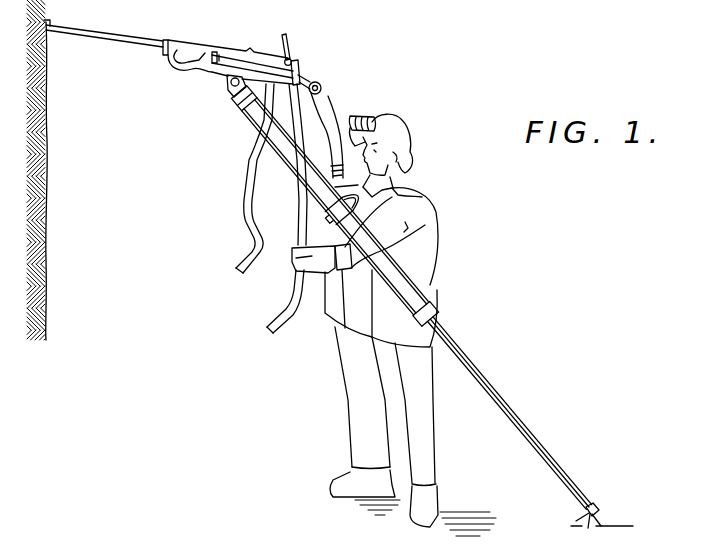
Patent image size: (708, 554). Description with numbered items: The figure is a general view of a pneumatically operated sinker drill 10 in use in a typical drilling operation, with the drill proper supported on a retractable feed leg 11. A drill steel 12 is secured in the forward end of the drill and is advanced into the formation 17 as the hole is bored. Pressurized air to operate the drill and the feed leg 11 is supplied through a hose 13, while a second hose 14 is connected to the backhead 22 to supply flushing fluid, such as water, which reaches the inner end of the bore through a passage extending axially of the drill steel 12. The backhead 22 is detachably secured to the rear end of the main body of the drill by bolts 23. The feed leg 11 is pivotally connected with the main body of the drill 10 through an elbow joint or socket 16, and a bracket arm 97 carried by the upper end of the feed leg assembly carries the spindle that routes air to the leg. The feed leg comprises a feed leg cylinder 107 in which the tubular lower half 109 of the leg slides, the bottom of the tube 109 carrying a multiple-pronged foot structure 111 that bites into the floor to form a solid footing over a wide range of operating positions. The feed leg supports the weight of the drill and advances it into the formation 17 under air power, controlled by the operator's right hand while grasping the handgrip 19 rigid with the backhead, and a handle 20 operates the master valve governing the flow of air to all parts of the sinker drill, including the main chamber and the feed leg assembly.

The sinker drill 10 is at (200, 35).
The feed leg 11 is at (237, 142).
The drill steel 12 is at (78, 28).
The hose 13 is at (257, 222).
The second hose 14 is at (282, 303).
The elbow joint or socket 16 is at (222, 86).
The formation 17 is at (47, 98).
The handgrip 19 is at (322, 87).
The handle 20 is at (288, 41).
The backhead 22 is at (293, 59).
The bolts 23 is at (231, 58).
The bracket arm 97 is at (228, 95).
The feed leg cylinder 107 is at (413, 279).
The tubular lower half of feed leg 109 is at (487, 380).
The multiple-pronged foot structure 111 is at (600, 504).